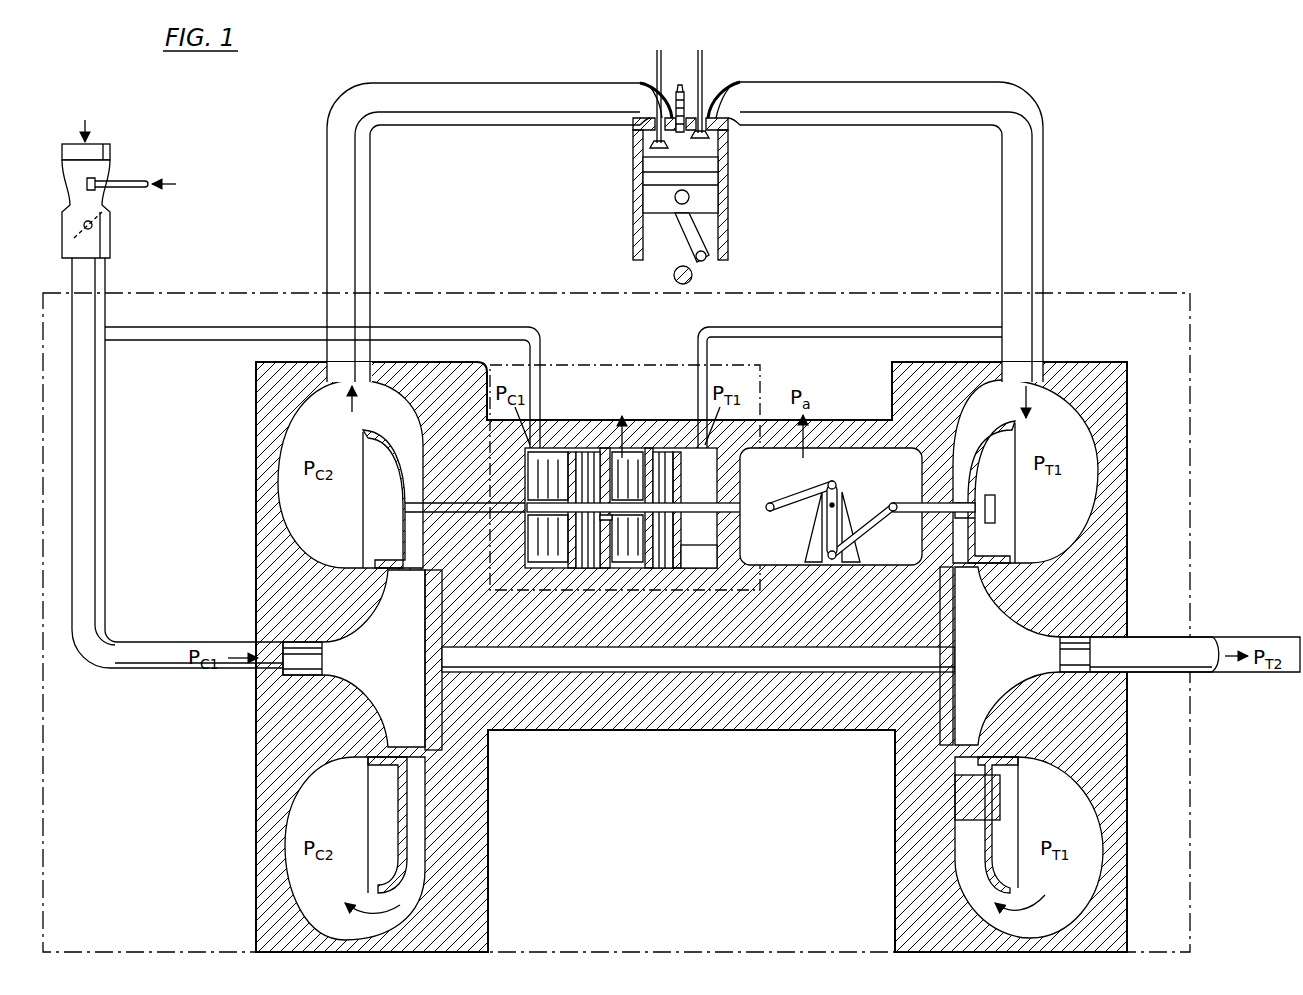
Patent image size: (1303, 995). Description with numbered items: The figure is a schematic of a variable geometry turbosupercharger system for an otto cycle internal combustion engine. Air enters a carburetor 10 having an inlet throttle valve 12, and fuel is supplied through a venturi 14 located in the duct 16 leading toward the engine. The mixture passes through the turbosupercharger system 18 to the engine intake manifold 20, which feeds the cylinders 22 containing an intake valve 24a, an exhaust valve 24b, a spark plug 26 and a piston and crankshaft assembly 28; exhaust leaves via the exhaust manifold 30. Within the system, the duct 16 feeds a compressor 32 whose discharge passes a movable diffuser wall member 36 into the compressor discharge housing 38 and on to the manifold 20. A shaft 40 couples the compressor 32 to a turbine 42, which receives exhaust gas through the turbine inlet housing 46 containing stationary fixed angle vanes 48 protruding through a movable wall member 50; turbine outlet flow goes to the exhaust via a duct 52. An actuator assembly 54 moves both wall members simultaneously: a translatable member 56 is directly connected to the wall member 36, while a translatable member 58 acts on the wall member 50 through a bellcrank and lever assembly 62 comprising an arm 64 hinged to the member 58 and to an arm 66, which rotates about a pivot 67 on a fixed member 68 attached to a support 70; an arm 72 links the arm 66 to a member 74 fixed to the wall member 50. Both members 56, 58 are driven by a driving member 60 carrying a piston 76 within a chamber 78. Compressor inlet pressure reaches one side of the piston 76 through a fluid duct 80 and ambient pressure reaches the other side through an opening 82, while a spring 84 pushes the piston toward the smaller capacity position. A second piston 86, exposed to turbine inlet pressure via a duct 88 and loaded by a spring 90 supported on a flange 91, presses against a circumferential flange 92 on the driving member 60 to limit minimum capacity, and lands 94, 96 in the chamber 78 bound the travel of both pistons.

The carburetor 10 is at (58, 190).
The inlet throttle valve 12 is at (83, 228).
The venturi 14 is at (124, 180).
The duct 16 is at (98, 280).
The turbosupercharger system 18 is at (303, 291).
The engine intake manifold 20 is at (327, 154).
The cylinders 22 is at (630, 180).
The intake valve 24a is at (656, 64).
The exhaust valve 24b is at (704, 64).
The spark plug 26 is at (680, 86).
The piston and crankshaft assembly 28 is at (677, 242).
The exhaust manifold 30 is at (1028, 160).
The compressor 32 is at (407, 698).
The movable diffuser wall member 36 is at (361, 521).
The compressor discharge housing 38 is at (333, 430).
The shaft 40 is at (695, 673).
The turbine 42 is at (997, 695).
The turbine inlet housing 46 is at (1071, 440).
The stationary fixed angle vanes 48 is at (1001, 794).
The movable wall member 50 is at (1017, 505).
The duct 52 is at (1196, 638).
The actuator assembly 54 is at (641, 364).
The translatable member 56 is at (402, 490).
The translatable member 58 is at (770, 502).
The driving member 60 is at (610, 503).
The bellcrank and lever assembly 62 is at (866, 494).
The arm 64 is at (806, 494).
The arm 66 is at (836, 484).
The pivot 67 is at (826, 512).
The fixed member 68 is at (820, 546).
The support 70 is at (885, 568).
The arm 72 is at (870, 522).
The member 74 is at (966, 498).
The piston 76 is at (589, 450).
The chamber 78 is at (552, 447).
The fluid duct 80 is at (478, 327).
The opening 82 is at (636, 420).
The spring 84 is at (564, 510).
The second piston 86 is at (680, 472).
The duct 88 is at (803, 327).
The spring 90 is at (627, 542).
The flange 91 is at (605, 523).
The circumferential flange 92 is at (676, 487).
The land 94 is at (548, 542).
The land 96 is at (699, 556).